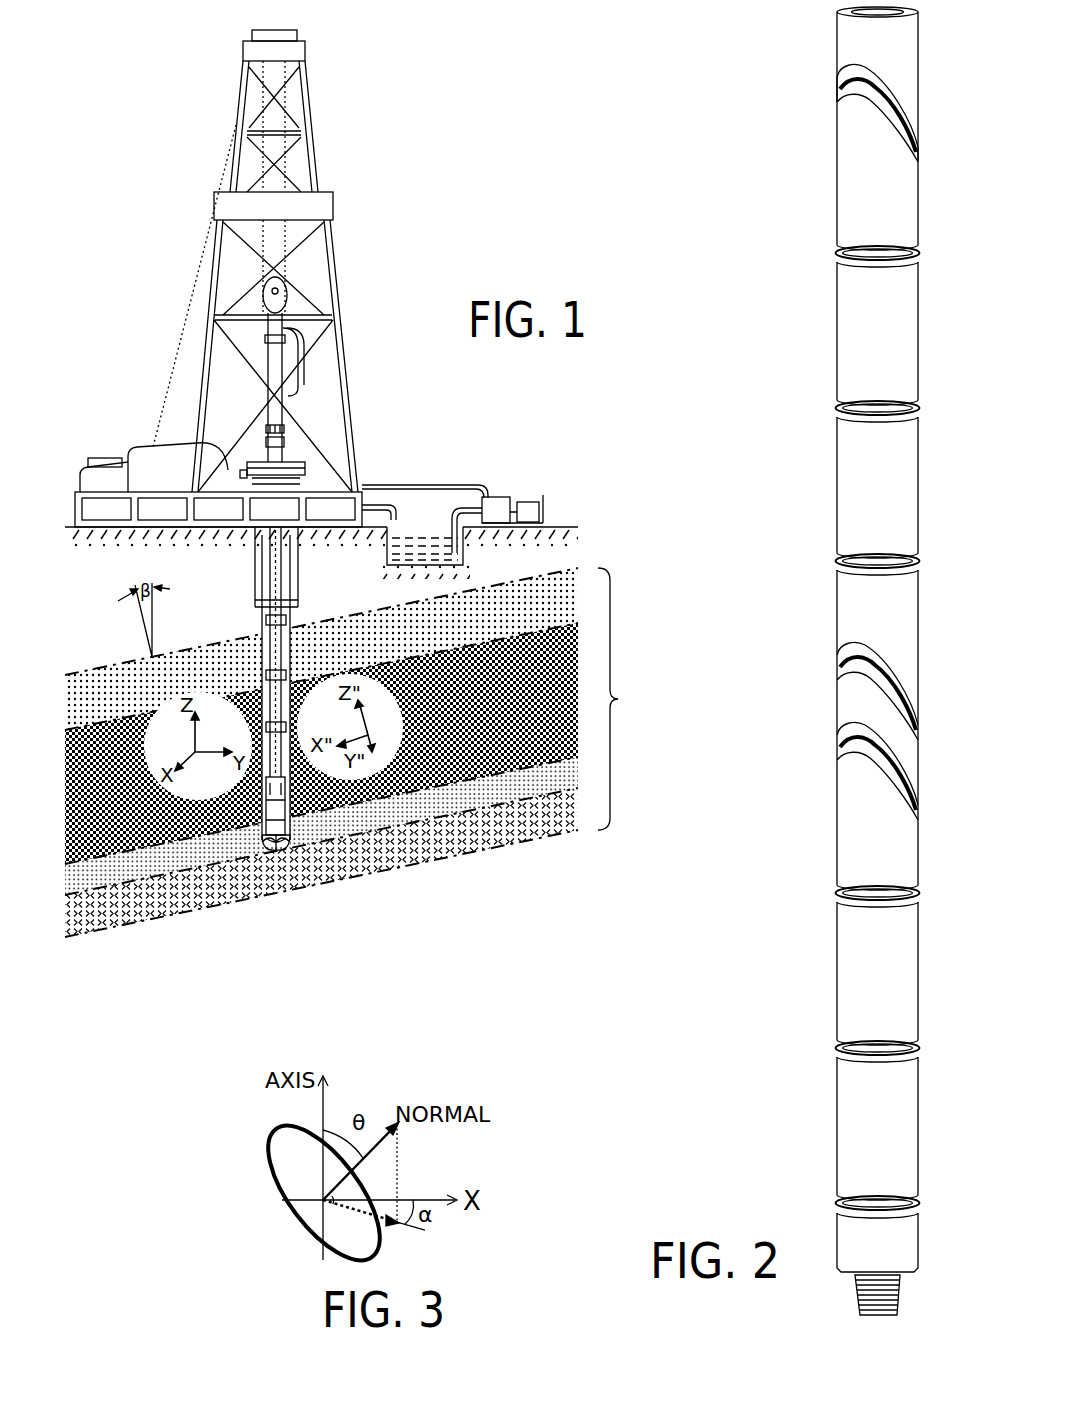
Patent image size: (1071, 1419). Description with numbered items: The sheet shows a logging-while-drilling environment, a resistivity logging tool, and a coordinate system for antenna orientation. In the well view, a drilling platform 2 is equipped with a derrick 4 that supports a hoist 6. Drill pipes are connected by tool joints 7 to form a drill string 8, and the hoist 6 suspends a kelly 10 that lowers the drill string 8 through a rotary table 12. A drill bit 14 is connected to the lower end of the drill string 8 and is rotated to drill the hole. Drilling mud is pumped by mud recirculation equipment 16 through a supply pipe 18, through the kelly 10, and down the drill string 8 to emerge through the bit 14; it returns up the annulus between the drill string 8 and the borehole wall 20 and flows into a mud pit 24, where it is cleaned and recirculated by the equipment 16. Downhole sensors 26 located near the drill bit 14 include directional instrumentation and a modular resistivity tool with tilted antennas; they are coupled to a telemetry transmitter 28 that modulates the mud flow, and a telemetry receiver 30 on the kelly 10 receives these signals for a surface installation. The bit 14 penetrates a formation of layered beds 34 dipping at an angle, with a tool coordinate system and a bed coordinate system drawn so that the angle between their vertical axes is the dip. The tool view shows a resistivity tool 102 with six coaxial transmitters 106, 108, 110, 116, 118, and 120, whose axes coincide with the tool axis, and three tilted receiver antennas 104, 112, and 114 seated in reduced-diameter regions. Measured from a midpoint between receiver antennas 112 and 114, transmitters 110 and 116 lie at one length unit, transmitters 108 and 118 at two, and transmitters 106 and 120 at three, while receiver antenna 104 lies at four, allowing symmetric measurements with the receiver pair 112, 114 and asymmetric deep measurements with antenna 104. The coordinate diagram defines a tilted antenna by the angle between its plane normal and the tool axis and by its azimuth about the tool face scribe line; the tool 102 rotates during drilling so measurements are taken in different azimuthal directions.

In FIG. 1, the drilling platform 2 is at (80, 497).
In FIG. 1, the derrick 4 is at (317, 163).
In FIG. 1, the hoist 6 is at (288, 290).
In FIG. 1, the tool joints 7 is at (268, 618).
In FIG. 1, the drill string 8 is at (270, 631).
In FIG. 1, the kelly 10 is at (276, 357).
In FIG. 1, the rotary table 12 is at (294, 467).
In FIG. 1, the drill bit 14 is at (290, 843).
In FIG. 1, the mud recirculation equipment 16 is at (492, 500).
In FIG. 1, the supply pipe 18 is at (436, 486).
In FIG. 1, the borehole wall 20 is at (289, 625).
In FIG. 1, the mud pit 24 is at (455, 559).
In FIG. 1, the downhole sensors 26 is at (270, 812).
In FIG. 1, the telemetry transmitter 28 is at (282, 792).
In FIG. 1, the telemetry receiver 30 is at (284, 427).
In FIG. 1, the layered beds 34 is at (360, 752).
In FIG. 2, the resistivity tool 102 is at (840, 35).
In FIG. 2, the tilted receiver antenna 104 is at (838, 82).
In FIG. 2, the coaxial transmitter 106 is at (840, 253).
In FIG. 2, the coaxial transmitter 108 is at (840, 409).
In FIG. 2, the coaxial transmitter 110 is at (840, 561).
In FIG. 2, the tilted receiver antenna 112 is at (838, 662).
In FIG. 2, the tilted receiver antenna 114 is at (838, 742).
In FIG. 2, the coaxial transmitter 116 is at (840, 893).
In FIG. 2, the coaxial transmitter 118 is at (840, 1048).
In FIG. 2, the coaxial transmitter 120 is at (840, 1203).